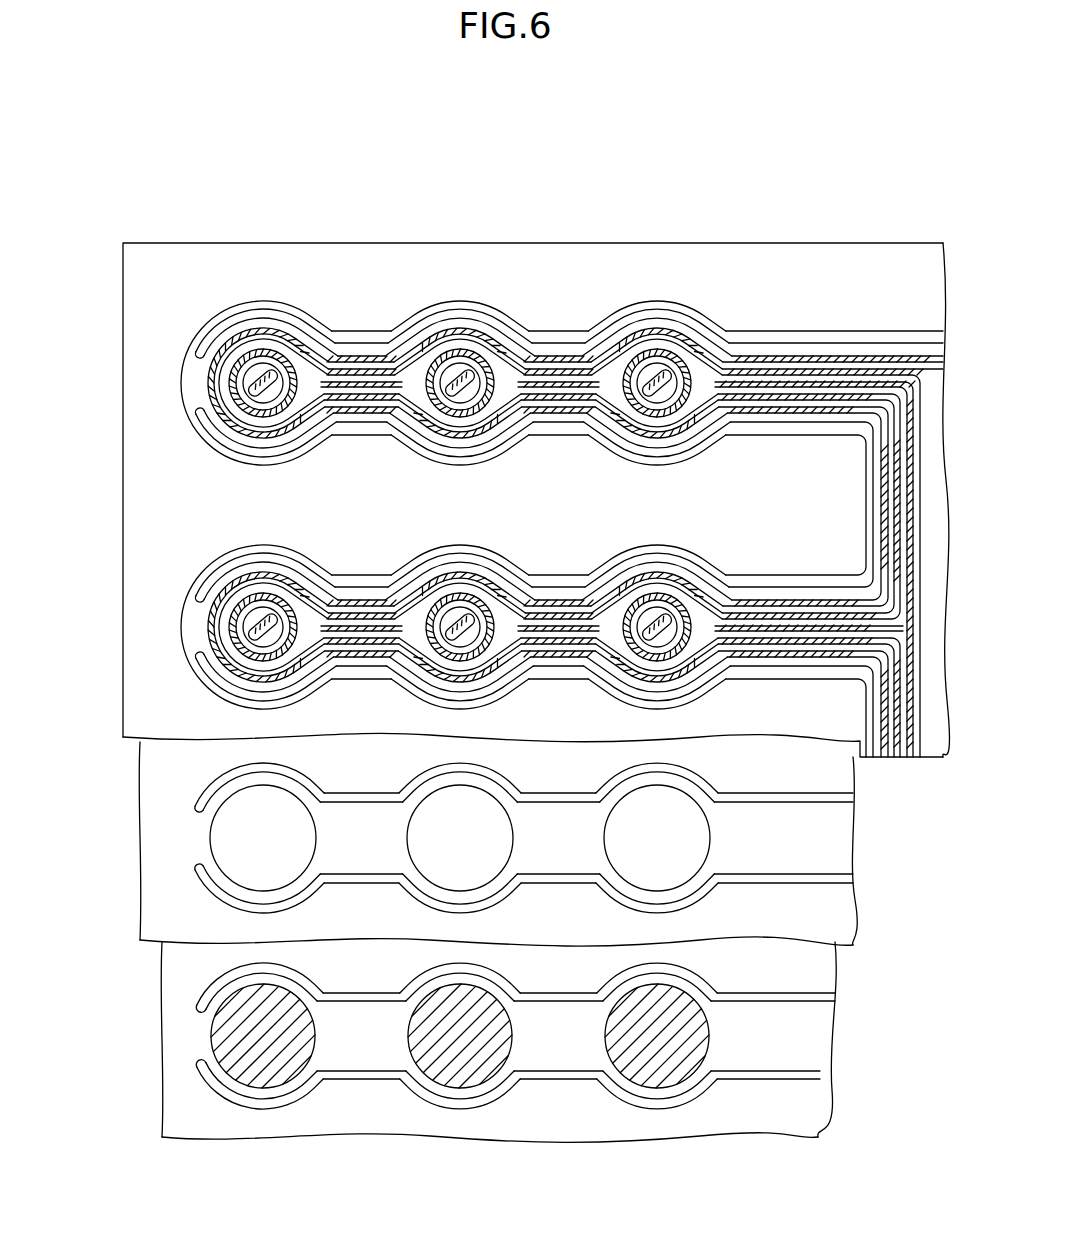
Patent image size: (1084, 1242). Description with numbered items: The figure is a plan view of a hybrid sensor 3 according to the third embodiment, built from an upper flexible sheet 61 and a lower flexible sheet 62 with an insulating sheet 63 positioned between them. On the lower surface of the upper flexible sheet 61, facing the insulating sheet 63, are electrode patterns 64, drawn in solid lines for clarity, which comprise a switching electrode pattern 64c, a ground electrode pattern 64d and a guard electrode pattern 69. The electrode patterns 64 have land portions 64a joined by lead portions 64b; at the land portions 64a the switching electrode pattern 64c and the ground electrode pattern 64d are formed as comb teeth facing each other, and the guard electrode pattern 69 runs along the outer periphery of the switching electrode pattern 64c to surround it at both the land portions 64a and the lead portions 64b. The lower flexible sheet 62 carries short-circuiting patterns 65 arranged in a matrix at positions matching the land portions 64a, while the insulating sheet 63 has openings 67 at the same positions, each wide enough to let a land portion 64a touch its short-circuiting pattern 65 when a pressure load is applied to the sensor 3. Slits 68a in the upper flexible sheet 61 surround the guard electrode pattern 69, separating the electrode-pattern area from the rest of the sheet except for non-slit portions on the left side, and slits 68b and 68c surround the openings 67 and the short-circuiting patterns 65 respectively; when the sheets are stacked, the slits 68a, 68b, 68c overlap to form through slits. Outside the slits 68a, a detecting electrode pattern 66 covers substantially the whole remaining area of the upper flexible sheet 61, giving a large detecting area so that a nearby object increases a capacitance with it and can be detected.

The hybrid sensor 3 is at (776, 193).
The upper flexible sheet 61 is at (372, 272).
The lower flexible sheet 62 is at (788, 1110).
The insulating sheet 63 is at (823, 917).
The electrode patterns 64 is at (493, 462).
The land portions 64a is at (280, 279).
The lead portions 64b is at (565, 299).
The switching electrode pattern 64c is at (232, 350).
The ground electrode pattern 64d is at (213, 372).
The short-circuiting patterns 65 is at (443, 1036).
The detecting electrode pattern 66 is at (158, 497).
The openings 67 is at (451, 838).
The slits 68a is at (197, 413).
The slits 68b is at (197, 805).
The slits 68c is at (197, 1003).
The guard electrode pattern 69 is at (215, 380).